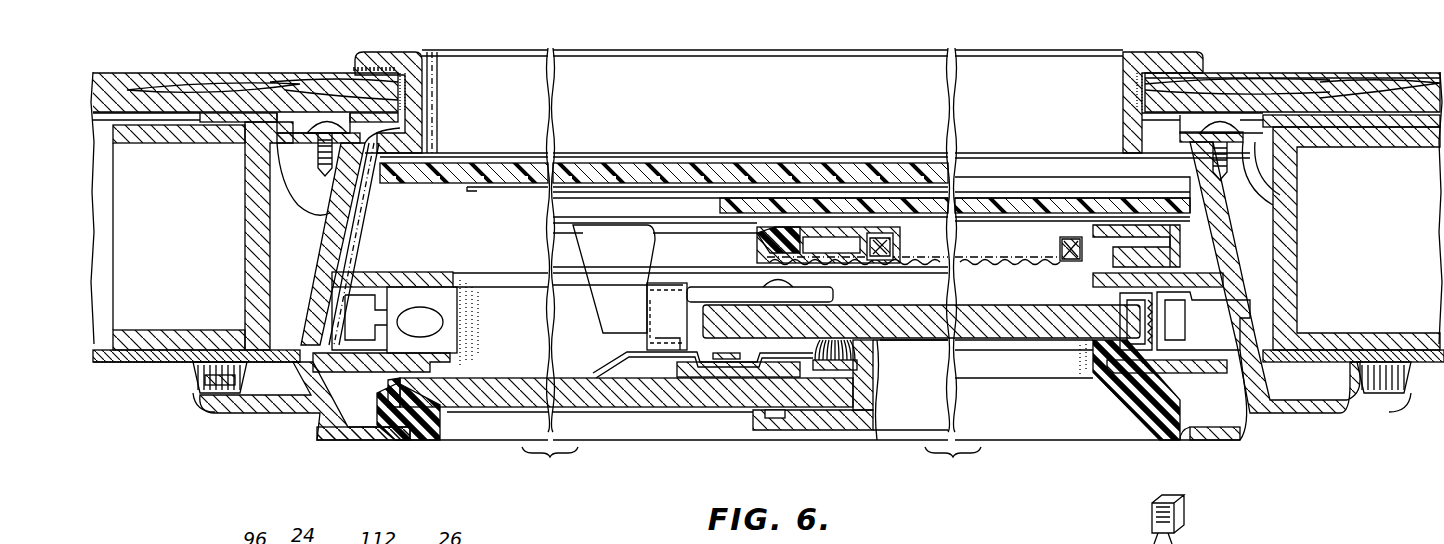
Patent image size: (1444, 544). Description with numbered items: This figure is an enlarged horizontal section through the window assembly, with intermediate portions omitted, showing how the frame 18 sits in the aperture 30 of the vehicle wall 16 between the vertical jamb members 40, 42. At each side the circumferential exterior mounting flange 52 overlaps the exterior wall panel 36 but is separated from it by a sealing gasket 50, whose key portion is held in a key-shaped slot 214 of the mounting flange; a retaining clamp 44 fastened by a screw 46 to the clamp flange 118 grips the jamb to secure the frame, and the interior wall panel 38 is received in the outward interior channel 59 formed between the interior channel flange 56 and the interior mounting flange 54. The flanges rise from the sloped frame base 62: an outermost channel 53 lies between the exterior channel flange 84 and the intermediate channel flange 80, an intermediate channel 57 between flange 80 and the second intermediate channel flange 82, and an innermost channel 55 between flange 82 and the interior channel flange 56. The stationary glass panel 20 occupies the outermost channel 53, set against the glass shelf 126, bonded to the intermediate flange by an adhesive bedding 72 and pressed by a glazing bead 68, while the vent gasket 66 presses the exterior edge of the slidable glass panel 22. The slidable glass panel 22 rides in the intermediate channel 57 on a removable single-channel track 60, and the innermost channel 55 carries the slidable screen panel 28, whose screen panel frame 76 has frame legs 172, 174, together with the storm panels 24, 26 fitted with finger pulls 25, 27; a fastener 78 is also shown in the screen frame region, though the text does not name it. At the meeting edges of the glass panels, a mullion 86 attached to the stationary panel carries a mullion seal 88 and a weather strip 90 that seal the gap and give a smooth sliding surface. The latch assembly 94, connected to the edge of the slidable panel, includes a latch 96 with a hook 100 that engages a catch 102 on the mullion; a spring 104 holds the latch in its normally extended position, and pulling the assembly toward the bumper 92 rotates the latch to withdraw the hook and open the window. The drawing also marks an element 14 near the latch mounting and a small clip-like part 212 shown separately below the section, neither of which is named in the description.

The support bar 14 is at (833, 295).
The vehicle wall 16 is at (111, 365).
The frame 18 is at (1243, 426).
The stationary glass panel 20 is at (722, 395).
The slidable glass panel 22 is at (1022, 332).
The storm panel 24 is at (748, 163).
The finger pull 25 is at (503, 189).
The storm panel 26 is at (1065, 197).
The finger pull 27 is at (1020, 197).
The slidable screen panel 28 is at (975, 257).
The aperture 30 is at (275, 244).
The exterior wall panel 36 is at (140, 364).
The interior wall panel 38 is at (160, 78).
The vertical jamb member 40 is at (1290, 268).
The vertical jamb member 42 is at (255, 273).
The retaining clamp 44 is at (217, 122).
The screw 46 is at (323, 120).
The sealing gasket 50 is at (191, 375).
The exterior mounting flange 52 is at (200, 405).
The outermost channel 53 is at (333, 427).
The interior mounting flange 54 is at (390, 52).
The innermost channel 55 is at (385, 212).
The interior channel flange 56 is at (378, 135).
The intermediate channel 57 is at (1195, 308).
The outward interior channel 59 is at (439, 83).
The single-channel track 60 is at (1152, 322).
The frame base 62 is at (340, 245).
The vent gasket 66 is at (1125, 418).
The glazing bead 68 is at (418, 428).
The adhesive bedding 72 is at (420, 370).
The screen panel frame 76 is at (815, 228).
The screw 78 is at (878, 235).
The intermediate channel flange 80 is at (1222, 363).
The second intermediate channel flange 82 is at (1190, 268).
The exterior channel flange 84 is at (360, 432).
The mullion 86 is at (766, 426).
The mullion seal 88 is at (877, 345).
The weather strip 90 is at (830, 372).
The bumper 92 is at (420, 300).
The latch assembly 94 is at (580, 243).
The latch 96 is at (652, 243).
The hook 100 is at (660, 380).
The catch 102 is at (613, 378).
The spring 104 is at (648, 346).
The clamp flange 118 is at (1240, 174).
The glass shelf 126 is at (1105, 395).
The frame leg 172 is at (1160, 230).
The frame leg 174 is at (1178, 228).
The clip 212 is at (1152, 515).
The key-shaped slot 214 is at (221, 395).